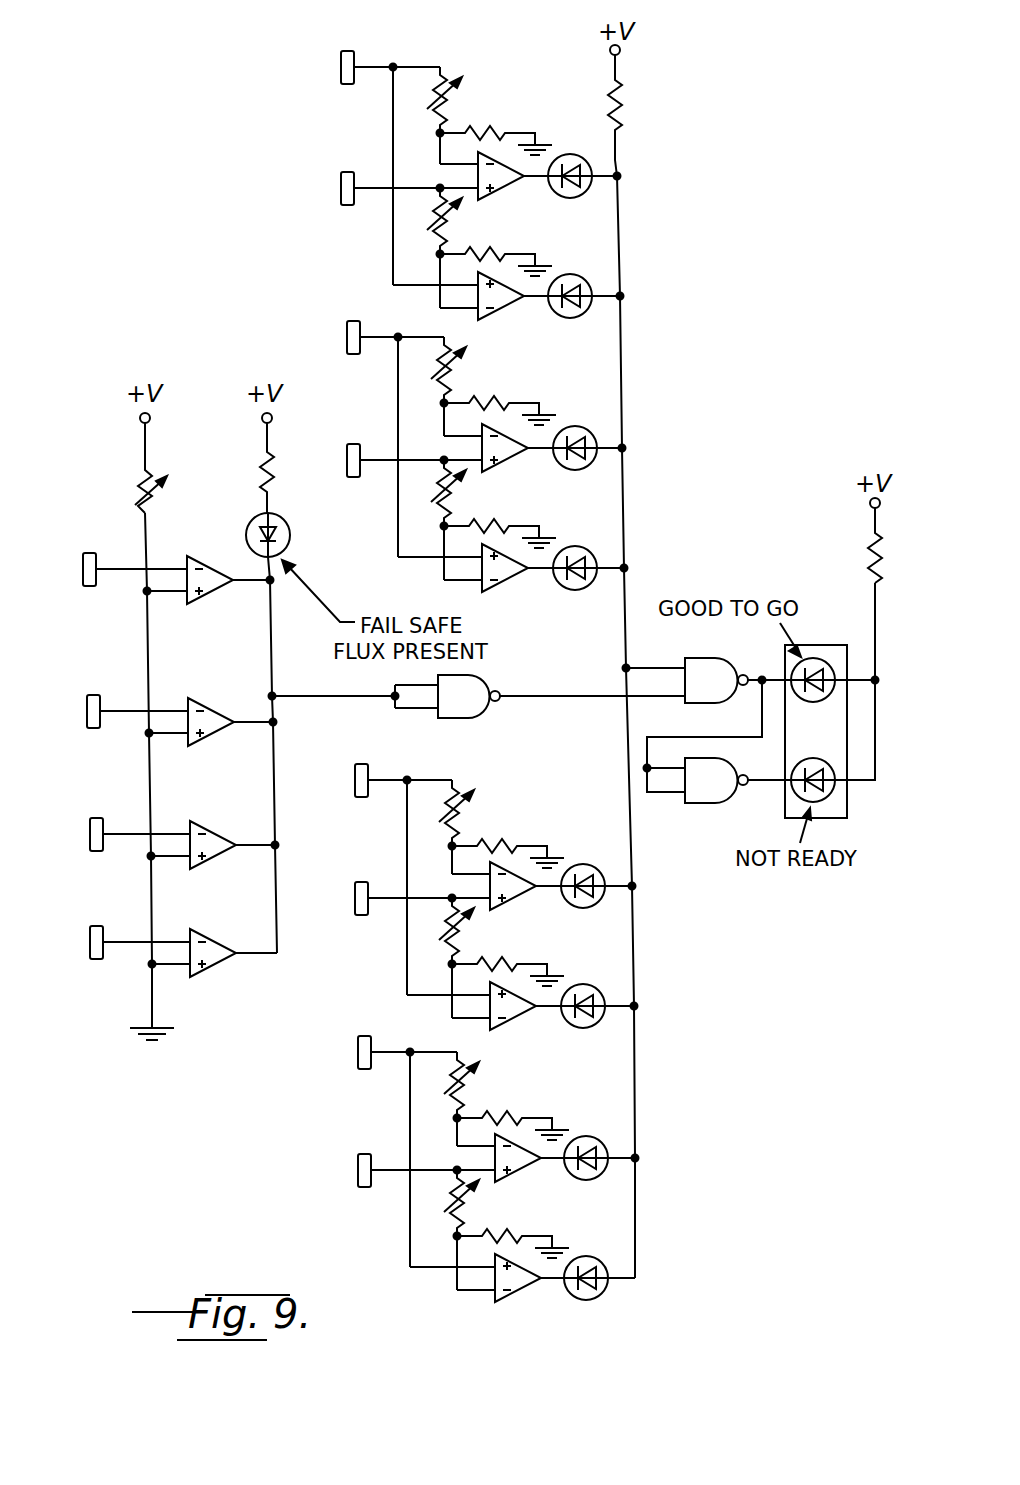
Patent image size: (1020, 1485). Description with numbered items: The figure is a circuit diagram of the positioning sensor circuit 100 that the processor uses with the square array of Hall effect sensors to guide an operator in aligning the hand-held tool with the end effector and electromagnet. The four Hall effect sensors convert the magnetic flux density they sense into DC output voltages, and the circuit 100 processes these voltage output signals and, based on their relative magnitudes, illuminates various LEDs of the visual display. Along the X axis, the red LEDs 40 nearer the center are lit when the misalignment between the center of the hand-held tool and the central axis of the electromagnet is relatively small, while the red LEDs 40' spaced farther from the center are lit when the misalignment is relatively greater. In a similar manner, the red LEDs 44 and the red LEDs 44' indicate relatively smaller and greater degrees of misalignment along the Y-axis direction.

The circuit 100 is at (233, 226).
The red LED 40 is at (617, 222).
The red LED 44 is at (620, 489).
The red LED 40' is at (629, 965).
The red LED 44' is at (632, 1233).